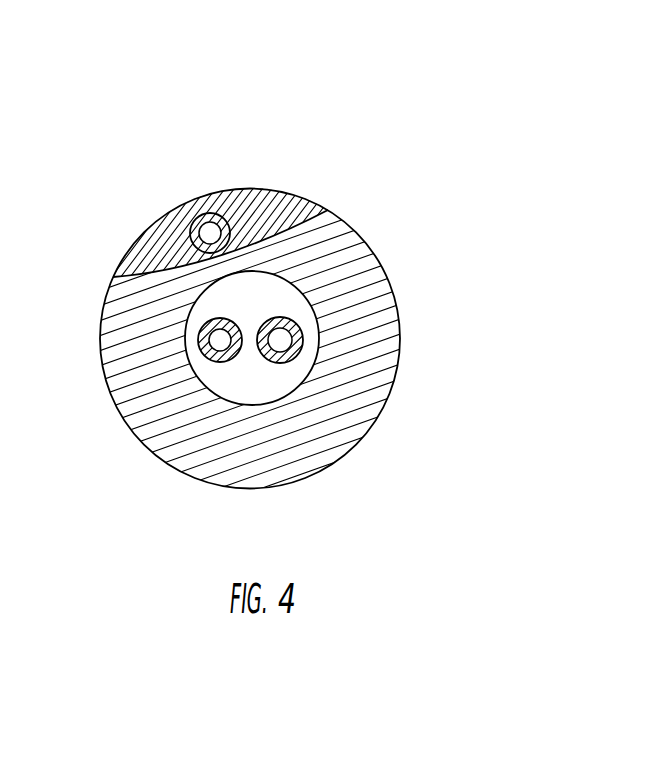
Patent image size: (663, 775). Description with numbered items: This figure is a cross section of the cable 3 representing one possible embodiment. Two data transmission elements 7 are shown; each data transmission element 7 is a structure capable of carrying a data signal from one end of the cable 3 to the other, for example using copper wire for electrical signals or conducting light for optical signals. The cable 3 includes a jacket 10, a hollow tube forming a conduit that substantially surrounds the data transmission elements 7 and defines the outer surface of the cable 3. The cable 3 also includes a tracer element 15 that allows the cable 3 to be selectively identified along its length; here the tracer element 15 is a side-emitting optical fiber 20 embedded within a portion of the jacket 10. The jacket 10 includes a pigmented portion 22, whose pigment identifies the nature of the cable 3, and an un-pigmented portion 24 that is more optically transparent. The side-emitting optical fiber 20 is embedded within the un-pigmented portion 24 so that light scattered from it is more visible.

The cable 3 is at (473, 72).
The data transmission element 7 is at (282, 364).
The jacket 10 is at (142, 463).
The tracer element 15 is at (203, 203).
The side-emitting optical fiber 20 is at (188, 228).
The pigmented portion 22 is at (355, 410).
The un-pigmented portion 24 is at (272, 197).